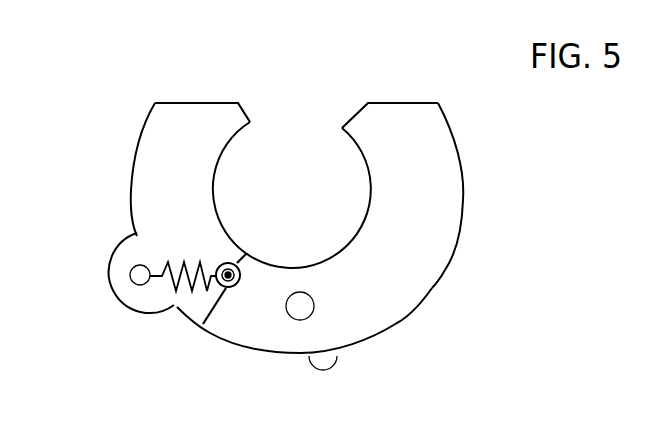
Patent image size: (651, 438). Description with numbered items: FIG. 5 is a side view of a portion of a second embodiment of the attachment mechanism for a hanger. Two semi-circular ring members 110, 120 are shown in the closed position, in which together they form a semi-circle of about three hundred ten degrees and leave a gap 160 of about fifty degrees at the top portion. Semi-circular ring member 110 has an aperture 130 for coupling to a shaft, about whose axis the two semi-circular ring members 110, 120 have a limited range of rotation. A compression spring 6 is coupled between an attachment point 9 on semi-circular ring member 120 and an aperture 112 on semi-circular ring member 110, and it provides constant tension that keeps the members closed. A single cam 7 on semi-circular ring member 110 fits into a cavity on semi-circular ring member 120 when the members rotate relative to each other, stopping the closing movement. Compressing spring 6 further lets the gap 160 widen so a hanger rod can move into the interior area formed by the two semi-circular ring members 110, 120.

The gap 160 is at (293, 133).
The semi-circular ring member 120 is at (148, 193).
The semi-circular ring member 110 is at (445, 196).
The aperture 112 is at (292, 195).
The attachment point 9 is at (131, 271).
The compression spring 6 is at (123, 344).
The aperture 130 is at (313, 312).
The cam 7 is at (323, 372).